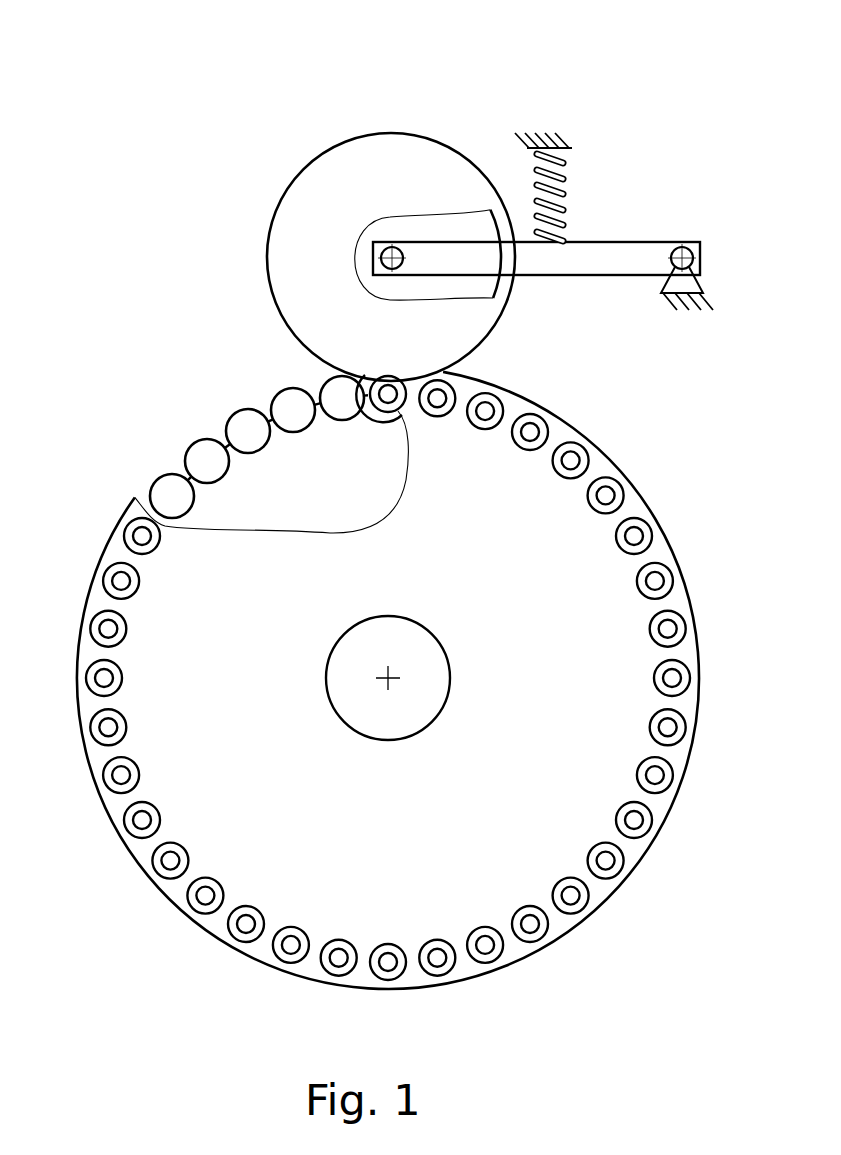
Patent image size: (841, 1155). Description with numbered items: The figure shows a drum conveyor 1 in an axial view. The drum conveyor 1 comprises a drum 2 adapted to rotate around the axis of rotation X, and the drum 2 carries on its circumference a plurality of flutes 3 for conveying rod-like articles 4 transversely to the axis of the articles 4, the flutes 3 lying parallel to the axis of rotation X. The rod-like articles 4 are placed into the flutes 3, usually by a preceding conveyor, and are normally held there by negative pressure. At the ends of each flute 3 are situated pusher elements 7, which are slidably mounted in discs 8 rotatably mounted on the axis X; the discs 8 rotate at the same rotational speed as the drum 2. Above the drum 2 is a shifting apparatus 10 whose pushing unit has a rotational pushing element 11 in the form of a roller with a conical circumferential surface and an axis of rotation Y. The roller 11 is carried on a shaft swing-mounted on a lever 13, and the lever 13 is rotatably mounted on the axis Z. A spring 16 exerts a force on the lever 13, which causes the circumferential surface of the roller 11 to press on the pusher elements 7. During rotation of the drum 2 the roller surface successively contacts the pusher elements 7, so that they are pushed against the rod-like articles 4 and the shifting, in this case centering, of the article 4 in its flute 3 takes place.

The drum conveyor 1 is at (128, 371).
The drum 2 is at (297, 466).
The flute 3 is at (242, 395).
The rod-like article 4 is at (232, 408).
The pusher element 7 is at (488, 409).
The disc 8 is at (195, 795).
The shifting apparatus 10 is at (267, 120).
The rotational pushing element 11 is at (415, 167).
The lever 13 is at (630, 250).
The spring 16 is at (562, 185).
The axis of rotation X is at (390, 680).
The axis of rotation Y is at (382, 257).
The axis Z is at (683, 258).